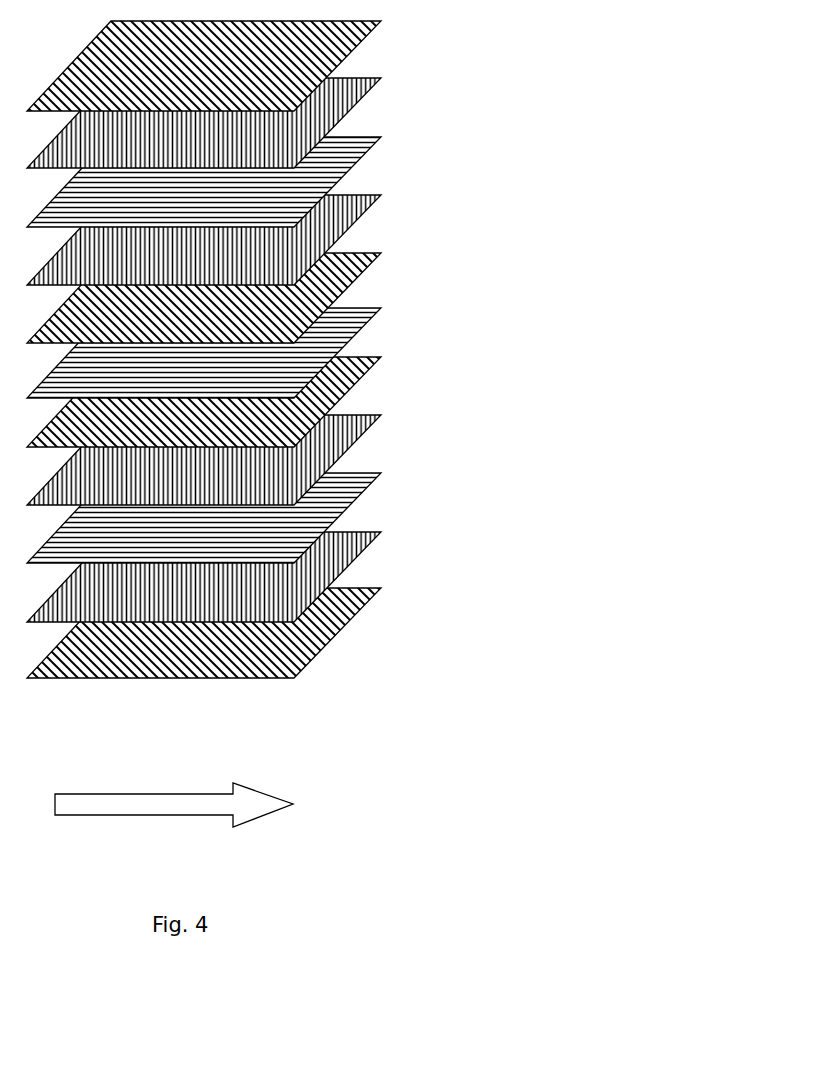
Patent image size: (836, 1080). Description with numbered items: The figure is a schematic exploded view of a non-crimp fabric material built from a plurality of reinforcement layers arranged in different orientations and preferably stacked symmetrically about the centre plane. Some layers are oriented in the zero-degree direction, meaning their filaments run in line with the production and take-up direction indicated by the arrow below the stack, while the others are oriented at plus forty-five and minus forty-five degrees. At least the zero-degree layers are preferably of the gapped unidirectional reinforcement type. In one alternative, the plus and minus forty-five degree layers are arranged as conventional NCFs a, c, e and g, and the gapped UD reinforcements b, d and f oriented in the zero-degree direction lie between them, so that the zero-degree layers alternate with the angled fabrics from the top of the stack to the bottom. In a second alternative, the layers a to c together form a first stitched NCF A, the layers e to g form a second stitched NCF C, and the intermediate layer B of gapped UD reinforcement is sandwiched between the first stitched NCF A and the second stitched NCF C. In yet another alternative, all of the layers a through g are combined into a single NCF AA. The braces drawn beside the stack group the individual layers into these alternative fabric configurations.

The conventional NCF a is at (295, 85).
The gapped UD reinforcement b is at (512, 110).
The conventional NCF c is at (512, 252).
The gapped UD reinforcement d is at (295, 337).
The conventional NCF e is at (295, 423).
The gapped UD reinforcement f is at (512, 445).
The conventional NCF g is at (512, 588).
The first stitched NCF A is at (337, 173).
The intermediate layer B is at (338, 337).
The second stitched NCF C is at (343, 509).
The single NCF AA is at (393, 340).